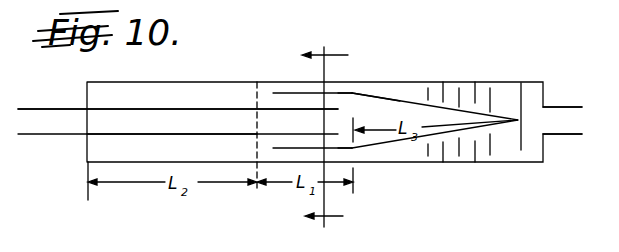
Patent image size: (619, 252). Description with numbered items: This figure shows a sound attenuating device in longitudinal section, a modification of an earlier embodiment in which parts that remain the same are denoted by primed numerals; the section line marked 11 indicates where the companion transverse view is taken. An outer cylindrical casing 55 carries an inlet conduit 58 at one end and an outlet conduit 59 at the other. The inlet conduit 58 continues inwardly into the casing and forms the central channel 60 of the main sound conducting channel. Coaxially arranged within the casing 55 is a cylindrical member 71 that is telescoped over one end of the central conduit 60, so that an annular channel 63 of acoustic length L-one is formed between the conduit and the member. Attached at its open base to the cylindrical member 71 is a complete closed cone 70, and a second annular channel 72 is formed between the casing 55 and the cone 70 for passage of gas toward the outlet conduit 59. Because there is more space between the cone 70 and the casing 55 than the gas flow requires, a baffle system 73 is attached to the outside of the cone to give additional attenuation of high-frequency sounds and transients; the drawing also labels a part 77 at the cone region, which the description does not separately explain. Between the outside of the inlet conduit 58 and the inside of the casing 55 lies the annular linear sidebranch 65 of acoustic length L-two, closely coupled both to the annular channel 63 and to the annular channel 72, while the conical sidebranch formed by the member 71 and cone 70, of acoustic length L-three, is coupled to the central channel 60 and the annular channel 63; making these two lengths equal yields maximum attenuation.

The cylindrical casing 55 is at (174, 82).
The inlet conduit 58 is at (48, 134).
The outlet conduit 59 is at (567, 94).
The central channel 60 is at (178, 120).
The annular channel 63 is at (289, 102).
The annular linear sidebranch 65 is at (172, 147).
The closed cone 70 is at (418, 86).
The cylindrical member 71 is at (337, 92).
The second annular channel 72 is at (338, 154).
The baffle system 73 is at (462, 143).
The cone surface 77 is at (375, 109).
The section line 11- 11 is at (325, 135).